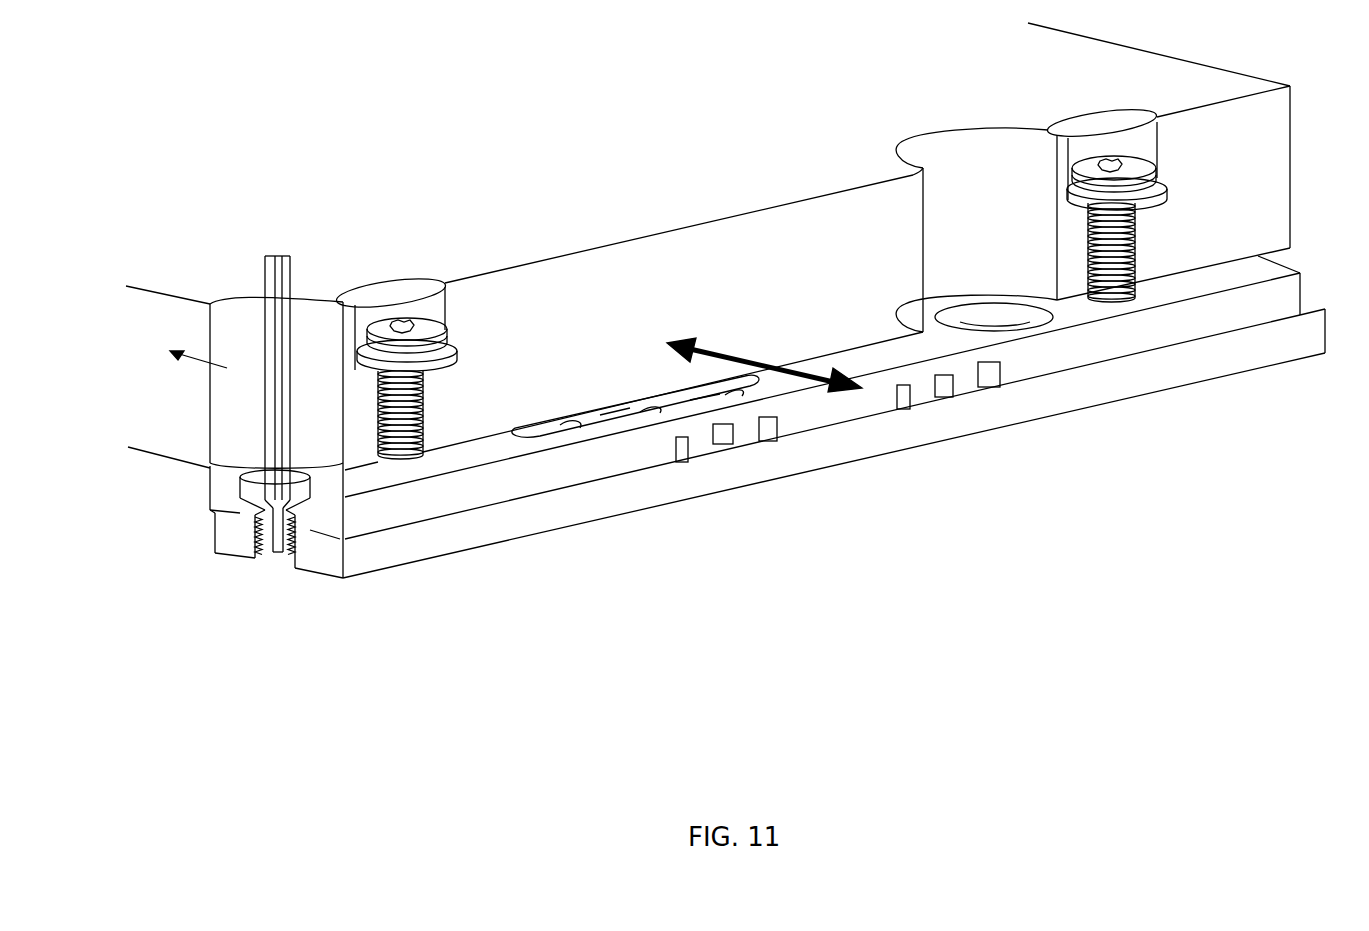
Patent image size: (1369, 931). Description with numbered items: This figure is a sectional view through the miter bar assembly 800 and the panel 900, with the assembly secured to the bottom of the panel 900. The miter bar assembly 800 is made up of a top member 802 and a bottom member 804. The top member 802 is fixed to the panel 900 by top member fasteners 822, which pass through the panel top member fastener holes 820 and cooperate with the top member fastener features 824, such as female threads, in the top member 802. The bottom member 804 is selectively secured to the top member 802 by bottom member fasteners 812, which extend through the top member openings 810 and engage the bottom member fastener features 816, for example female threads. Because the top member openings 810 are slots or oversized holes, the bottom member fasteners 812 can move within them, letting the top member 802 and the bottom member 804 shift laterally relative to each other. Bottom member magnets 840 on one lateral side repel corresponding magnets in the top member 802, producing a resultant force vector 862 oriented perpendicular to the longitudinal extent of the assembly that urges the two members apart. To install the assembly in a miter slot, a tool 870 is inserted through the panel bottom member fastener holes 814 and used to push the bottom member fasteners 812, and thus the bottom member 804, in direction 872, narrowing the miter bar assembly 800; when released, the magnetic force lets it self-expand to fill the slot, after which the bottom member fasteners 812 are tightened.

The miter bar assembly 800 is at (1052, 528).
The top member 802 is at (410, 513).
The bottom member 804 is at (368, 562).
The top member openings 810 is at (250, 483).
The bottom member fasteners 812 is at (276, 553).
The panel bottom member fastener holes 814 is at (237, 297).
The bottom member fastener features 816 is at (257, 537).
The panel top member fastener holes 820 is at (415, 275).
The top member fasteners 822 is at (413, 400).
The top member fastener features 824 is at (428, 456).
The bottom member magnets 840 is at (720, 445).
The resultant force vector 862 is at (758, 362).
The tool 870 is at (275, 273).
The direction 872 is at (272, 377).
The panel 900 is at (727, 143).